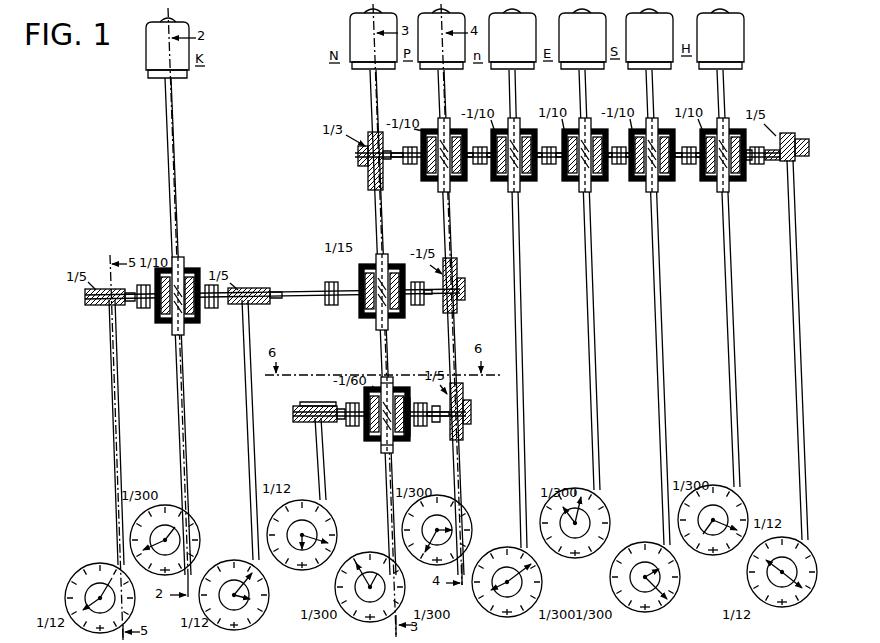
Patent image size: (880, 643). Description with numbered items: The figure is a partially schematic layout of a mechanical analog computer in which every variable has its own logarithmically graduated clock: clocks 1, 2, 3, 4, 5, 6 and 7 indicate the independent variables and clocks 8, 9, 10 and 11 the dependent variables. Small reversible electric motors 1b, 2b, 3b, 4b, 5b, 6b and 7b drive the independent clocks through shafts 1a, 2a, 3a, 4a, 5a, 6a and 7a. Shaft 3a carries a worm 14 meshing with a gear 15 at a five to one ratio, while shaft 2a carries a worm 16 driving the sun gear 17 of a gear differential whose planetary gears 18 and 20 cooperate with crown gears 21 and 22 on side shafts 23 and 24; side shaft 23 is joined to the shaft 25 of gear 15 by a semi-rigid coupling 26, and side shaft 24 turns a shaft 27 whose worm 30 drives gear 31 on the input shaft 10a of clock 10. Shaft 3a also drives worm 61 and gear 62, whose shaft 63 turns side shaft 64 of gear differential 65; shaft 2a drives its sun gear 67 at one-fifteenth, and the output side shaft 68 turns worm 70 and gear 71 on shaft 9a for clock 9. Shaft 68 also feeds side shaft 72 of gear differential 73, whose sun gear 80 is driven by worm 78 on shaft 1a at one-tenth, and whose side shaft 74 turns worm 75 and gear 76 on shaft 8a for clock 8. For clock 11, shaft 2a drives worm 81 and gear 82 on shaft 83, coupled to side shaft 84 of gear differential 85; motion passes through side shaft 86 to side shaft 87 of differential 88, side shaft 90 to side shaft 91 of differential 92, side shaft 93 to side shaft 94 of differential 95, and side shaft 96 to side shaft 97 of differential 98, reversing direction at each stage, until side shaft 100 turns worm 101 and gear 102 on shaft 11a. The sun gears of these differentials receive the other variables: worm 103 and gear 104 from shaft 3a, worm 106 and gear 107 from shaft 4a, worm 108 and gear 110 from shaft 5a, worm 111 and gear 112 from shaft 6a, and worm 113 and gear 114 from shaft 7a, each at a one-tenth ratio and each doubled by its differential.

The clock 1 is at (190, 519).
The clock 2 is at (368, 562).
The clock 3 is at (468, 512).
The clock 4 is at (508, 560).
The clock 5 is at (606, 510).
The clock 6 is at (646, 548).
The clock 7 is at (746, 511).
The clock 8 is at (96, 562).
The clock 9 is at (231, 562).
The clock 10 is at (328, 519).
The clock 11 is at (780, 548).
The shaft 1a is at (167, 122).
The electric motor 1b is at (150, 57).
The shaft 2a is at (371, 82).
The electric motor 2b is at (352, 31).
The shaft 3a is at (440, 80).
The electric motor 3b is at (427, 15).
The shaft 4a is at (511, 80).
The electric motor 4b is at (500, 13).
The shaft 5a is at (582, 78).
The electric motor 5b is at (570, 11).
The shaft 6a is at (650, 75).
The electric motor 6b is at (640, 11).
The shaft 7a is at (718, 75).
The electric motor 7b is at (711, 11).
The shaft 8a is at (113, 378).
The shaft 9a is at (249, 378).
The input shaft 10a is at (320, 459).
The shaft 11a is at (800, 431).
The worm 14 is at (470, 412).
The gear 15 is at (464, 392).
The worm 16 is at (388, 455).
The gear 17 is at (382, 450).
The planetary gear 18 is at (395, 396).
The planetary gear 20 is at (377, 439).
The crown gear 21 is at (403, 442).
The crown gear 22 is at (366, 425).
The side shaft 23 is at (423, 405).
The side shaft 24 is at (354, 405).
The shaft 25 is at (437, 416).
The semi-rigid coupling 26 is at (436, 422).
The shaft 27 is at (333, 407).
The worm 30 is at (318, 425).
The gear 31 is at (294, 415).
The worm 61 is at (460, 283).
The gear 62 is at (464, 294).
The shaft 63 is at (443, 294).
The side shaft 64 is at (420, 299).
The gear differential 65 is at (360, 303).
The sun gear 67 is at (384, 267).
The side shaft 68 is at (359, 288).
The worm 70 is at (252, 288).
The gear 71 is at (278, 290).
The side shaft 72 is at (208, 284).
The gear differential 73 is at (183, 268).
The side shaft 74 is at (144, 308).
The worm 75 is at (112, 304).
The gear 76 is at (92, 304).
The worm 78 is at (175, 324).
The gear 80 is at (185, 323).
The worm 81 is at (358, 156).
The gear 82 is at (370, 175).
The shaft 83 is at (406, 164).
The side shaft 84 is at (425, 176).
The gear differential 85 is at (438, 182).
The side shaft 86 is at (473, 164).
The side shaft 87 is at (492, 175).
The gear differential 88 is at (507, 182).
The side shaft 90 is at (543, 164).
The side shaft 91 is at (560, 172).
The gear differential 92 is at (578, 182).
The side shaft 93 is at (614, 164).
The side shaft 94 is at (629, 170).
The gear differential 95 is at (646, 182).
The side shaft 96 is at (684, 164).
The side shaft 97 is at (700, 170).
The gear differential 98 is at (714, 182).
The side shaft 100 is at (750, 158).
The worm 101 is at (762, 158).
The gear 102 is at (788, 136).
The worm 103 is at (448, 133).
The gear 104 is at (428, 126).
The worm 106 is at (521, 130).
The gear 107 is at (516, 126).
The worm 108 is at (588, 130).
The gear 110 is at (586, 126).
The worm 111 is at (657, 129).
The gear 112 is at (657, 126).
The worm 113 is at (727, 129).
The gear 114 is at (726, 126).